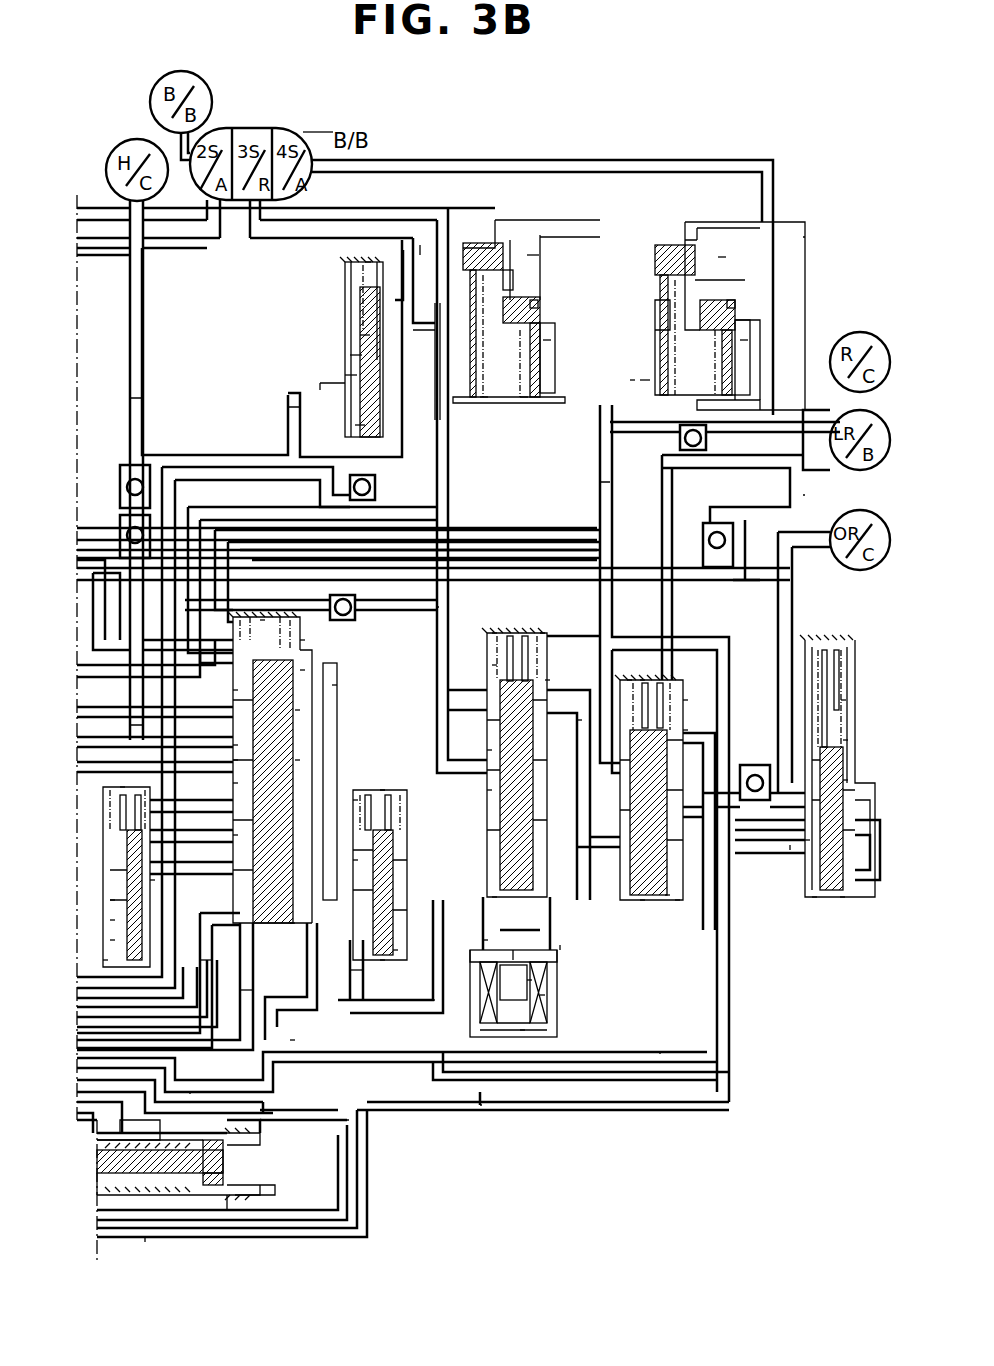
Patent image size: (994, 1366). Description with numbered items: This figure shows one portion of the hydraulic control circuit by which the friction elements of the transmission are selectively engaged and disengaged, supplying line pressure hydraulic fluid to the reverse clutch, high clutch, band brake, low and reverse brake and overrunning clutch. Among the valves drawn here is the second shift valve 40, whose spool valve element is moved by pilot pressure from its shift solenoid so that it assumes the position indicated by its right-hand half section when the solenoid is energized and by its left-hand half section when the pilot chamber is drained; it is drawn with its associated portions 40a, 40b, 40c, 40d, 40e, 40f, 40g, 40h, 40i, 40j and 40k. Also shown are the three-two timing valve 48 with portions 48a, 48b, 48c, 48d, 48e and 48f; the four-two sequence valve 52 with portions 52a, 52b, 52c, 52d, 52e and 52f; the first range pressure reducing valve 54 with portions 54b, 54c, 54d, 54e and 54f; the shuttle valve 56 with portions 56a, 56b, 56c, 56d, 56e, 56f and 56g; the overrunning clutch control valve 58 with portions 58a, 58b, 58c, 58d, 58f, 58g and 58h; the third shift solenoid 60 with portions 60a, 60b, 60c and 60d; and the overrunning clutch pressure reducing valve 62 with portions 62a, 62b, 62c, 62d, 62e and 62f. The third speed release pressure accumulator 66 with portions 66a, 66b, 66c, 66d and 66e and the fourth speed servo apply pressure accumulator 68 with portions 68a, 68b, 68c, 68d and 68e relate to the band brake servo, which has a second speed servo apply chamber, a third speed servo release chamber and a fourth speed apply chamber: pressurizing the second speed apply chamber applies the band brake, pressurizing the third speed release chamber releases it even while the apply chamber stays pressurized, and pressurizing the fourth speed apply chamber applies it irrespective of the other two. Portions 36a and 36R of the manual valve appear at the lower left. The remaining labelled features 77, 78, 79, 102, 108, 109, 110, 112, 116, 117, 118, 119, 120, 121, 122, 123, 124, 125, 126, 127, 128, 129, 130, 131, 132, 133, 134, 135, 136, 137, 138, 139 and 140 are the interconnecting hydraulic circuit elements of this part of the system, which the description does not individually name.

The manual valve spool 36a is at (227, 1165).
The reverse port of manual valve 36R is at (235, 1195).
The second shift valve 40 is at (268, 928).
The spring 40a is at (262, 620).
The spring chamber 40b is at (300, 640).
The end chamber 40c is at (290, 923).
The port 40d is at (233, 690).
The land 40e is at (300, 712).
The port 40f is at (235, 745).
The land 40g is at (300, 760).
The port 40h is at (233, 783).
The port 40i is at (233, 835).
The port 40j is at (300, 670).
The port 40k is at (233, 760).
The 3-2 timing valve 48 is at (330, 303).
The spring 48a is at (362, 263).
The spool land 48b is at (360, 335).
The port 48c is at (350, 355).
The port 48d is at (345, 375).
The chamber 48e is at (355, 428).
The port 48f is at (320, 383).
The 4-2 sequence valve 52 is at (104, 881).
The spring 52a is at (125, 790).
The port 52b is at (110, 940).
The port 52c is at (110, 897).
The port 52d is at (105, 923).
The port 52e is at (103, 960).
The port 52f is at (150, 880).
The first range pressure reducing valve 54 is at (366, 784).
The port 54b is at (353, 800).
The port 54c is at (322, 1030).
The port 54d is at (393, 950).
The port 54e is at (353, 860).
The port 54f is at (380, 960).
The shuttle valve 56 is at (515, 625).
The spring 56a is at (540, 633).
The port 56b is at (493, 665).
The port 56c is at (490, 900).
The port 56d is at (547, 700).
The port 56e is at (487, 750).
The port 56f is at (487, 790).
The port 56g is at (492, 634).
The overrunning clutch control valve 58 is at (630, 680).
The spring 58a is at (660, 690).
The port 58b is at (683, 700).
The port 58c is at (675, 900).
The port 58d is at (627, 680).
The port 58f is at (667, 900).
The port 58g is at (640, 902).
The port 58h is at (700, 722).
The third shift solenoid 60 is at (581, 968).
The coil 60a is at (540, 995).
The plunger 60b is at (520, 1030).
The valve body 60c is at (527, 980).
The drain port 60d is at (513, 950).
The overrunning clutch pressure reducing valve 62 is at (803, 903).
The spring 62a is at (843, 705).
The land 62b is at (843, 740).
The port 62c is at (812, 897).
The land 62d is at (843, 782).
The port 62e is at (805, 842).
The port 62f is at (840, 897).
The third speed release pressure accumulator 66 is at (491, 240).
The piston 66a is at (538, 305).
The chamber 66b is at (523, 400).
The spring 66c is at (548, 340).
The chamber 66d is at (527, 257).
The chamber 66e is at (485, 400).
The fourth speed servo apply pressure accumulator 68 is at (680, 236).
The piston 68a is at (735, 303).
The chamber 68b is at (630, 380).
The spring 68c is at (745, 342).
The chamber 68d is at (720, 257).
The chamber 68e is at (680, 380).
The line pressure passage 77 is at (145, 1237).
The passage 78 is at (420, 245).
The passage 79 is at (480, 1105).
The passage 102 is at (190, 1100).
The passage 108 is at (350, 970).
The passage 109 is at (560, 950).
The passage 110 is at (483, 945).
The passage 112 is at (432, 1013).
The passage 116 is at (660, 1058).
The passage 117 is at (240, 960).
The passage 118 is at (130, 400).
The check valve 119 is at (115, 490).
The check valve 120 is at (115, 538).
The passage 121 is at (440, 260).
The check valve 122 is at (339, 498).
The passage 123 is at (300, 407).
The passage 124 is at (222, 507).
The passage 125 is at (105, 635).
The passage 126 is at (245, 600).
The check valve 127 is at (338, 592).
The passage 128 is at (805, 237).
The passage 129 is at (745, 566).
The check valve 130 is at (680, 495).
The passage 131 is at (337, 685).
The passage 132 is at (300, 990).
The passage 133 is at (437, 670).
The passage 134 is at (555, 720).
The passage 135 is at (605, 160).
The check valve 136 is at (722, 438).
The passage 137 is at (790, 845).
The passage 138 is at (792, 622).
The check valve 139 is at (752, 765).
The passage 140 is at (729, 642).